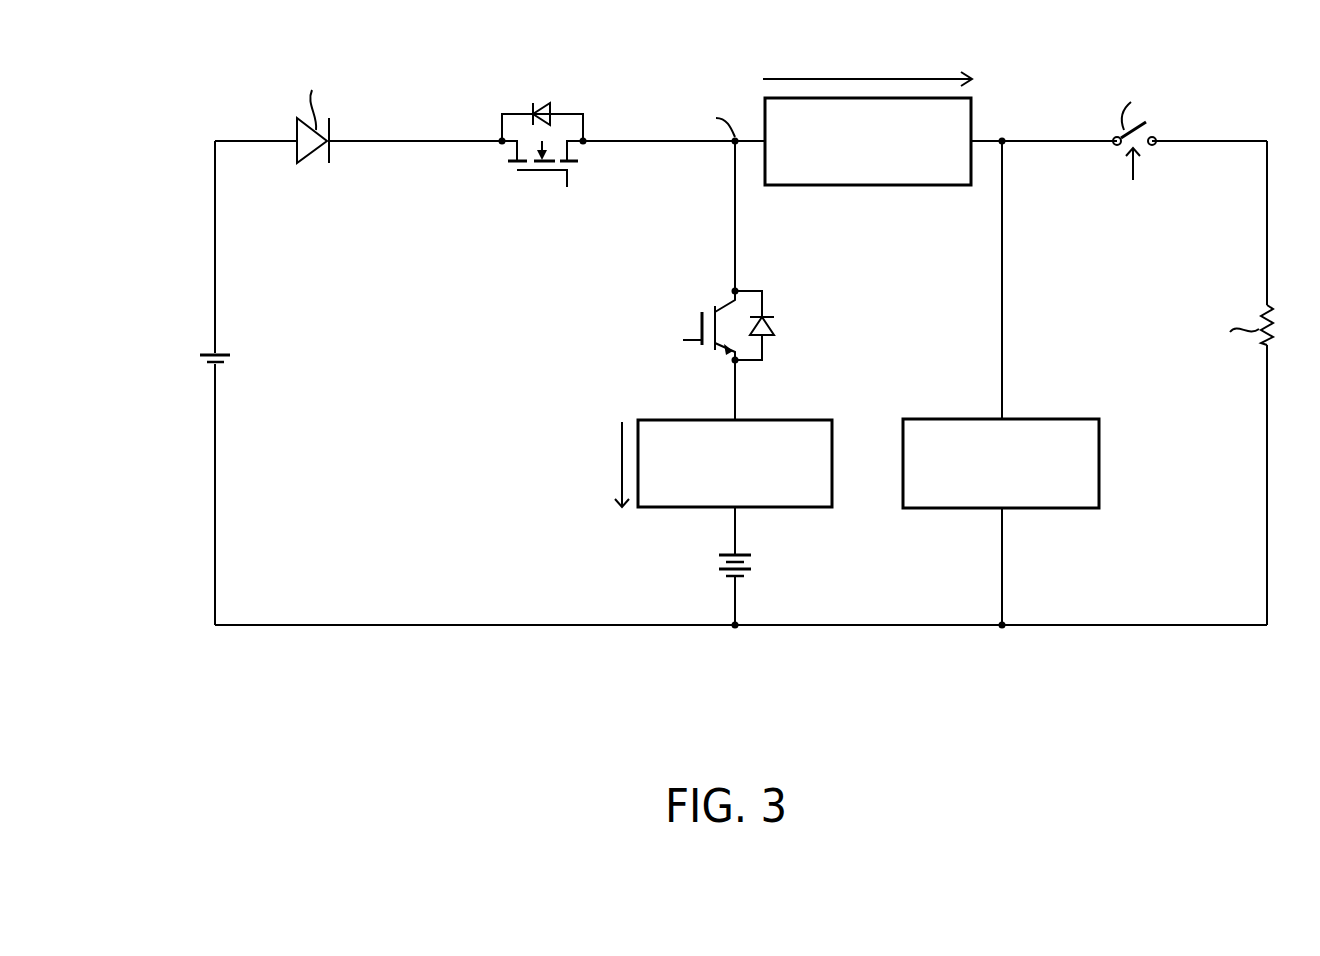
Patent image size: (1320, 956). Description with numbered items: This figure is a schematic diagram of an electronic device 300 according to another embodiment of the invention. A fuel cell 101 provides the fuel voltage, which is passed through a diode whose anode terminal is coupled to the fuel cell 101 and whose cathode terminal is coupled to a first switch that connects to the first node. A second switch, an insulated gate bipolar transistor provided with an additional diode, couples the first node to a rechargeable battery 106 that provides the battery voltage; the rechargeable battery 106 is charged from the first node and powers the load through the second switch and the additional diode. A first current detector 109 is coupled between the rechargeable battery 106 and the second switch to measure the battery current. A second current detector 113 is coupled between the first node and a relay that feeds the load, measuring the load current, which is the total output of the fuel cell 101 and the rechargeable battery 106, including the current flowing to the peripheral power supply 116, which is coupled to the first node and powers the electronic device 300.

The fuel cell 101 is at (200, 356).
The rechargeable battery 106 is at (719, 566).
The first current detector 109 is at (638, 420).
The second current detector 113 is at (765, 185).
The peripheral power supply 116 is at (903, 419).
The electronic device 300 is at (968, 739).